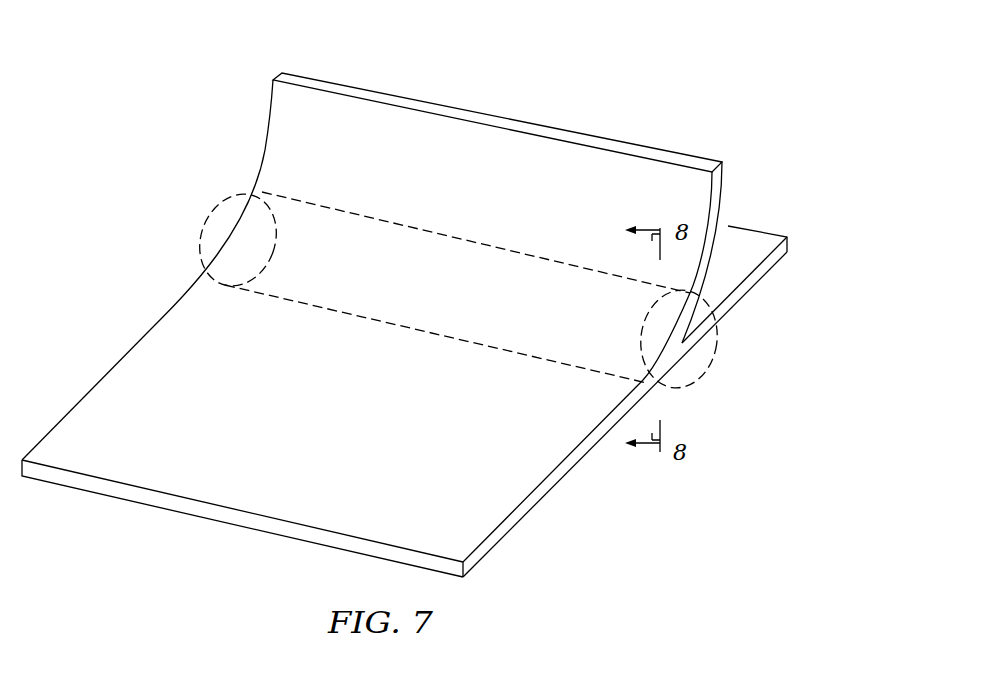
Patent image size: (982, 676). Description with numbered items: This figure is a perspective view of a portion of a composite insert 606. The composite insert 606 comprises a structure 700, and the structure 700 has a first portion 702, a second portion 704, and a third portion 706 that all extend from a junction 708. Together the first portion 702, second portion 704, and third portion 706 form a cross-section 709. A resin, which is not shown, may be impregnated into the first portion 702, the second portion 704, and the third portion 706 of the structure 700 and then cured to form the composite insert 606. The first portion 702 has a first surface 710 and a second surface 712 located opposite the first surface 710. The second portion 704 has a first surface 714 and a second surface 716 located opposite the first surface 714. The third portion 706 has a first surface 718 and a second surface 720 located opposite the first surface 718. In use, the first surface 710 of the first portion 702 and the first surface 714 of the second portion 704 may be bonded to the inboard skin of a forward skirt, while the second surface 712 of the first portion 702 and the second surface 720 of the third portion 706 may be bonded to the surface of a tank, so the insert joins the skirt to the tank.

The composite insert 606 is at (149, 118).
The structure 700 is at (594, 497).
The first portion 702 is at (491, 549).
The second portion 704 is at (753, 283).
The third portion 706 is at (417, 107).
The junction 708 is at (724, 356).
The cross-section 709 is at (499, 58).
The first surface 710 is at (167, 511).
The second surface 712 is at (267, 503).
The first surface 714 is at (776, 265).
The second surface 716 is at (752, 238).
The first surface 718 is at (312, 78).
The second surface 720 is at (363, 114).